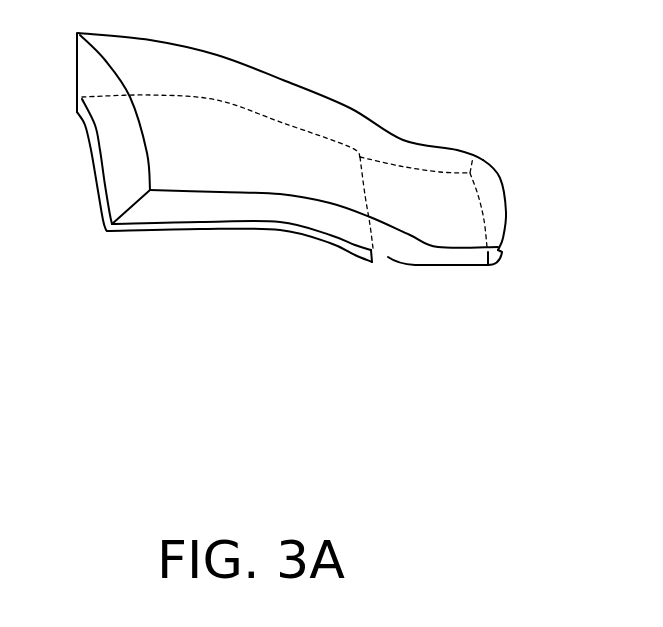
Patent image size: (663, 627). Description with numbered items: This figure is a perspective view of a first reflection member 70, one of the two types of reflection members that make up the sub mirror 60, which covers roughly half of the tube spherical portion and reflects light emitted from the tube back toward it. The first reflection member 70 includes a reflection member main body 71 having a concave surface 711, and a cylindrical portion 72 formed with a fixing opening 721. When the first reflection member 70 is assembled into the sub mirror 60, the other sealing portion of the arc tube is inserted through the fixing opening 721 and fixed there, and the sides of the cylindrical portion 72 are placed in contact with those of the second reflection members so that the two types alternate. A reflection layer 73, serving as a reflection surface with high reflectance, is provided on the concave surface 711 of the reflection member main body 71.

The first reflection member 70 is at (500, 364).
The sub mirror 60 is at (280, 399).
The reflection member main body 71 is at (238, 207).
The concave surface 711 is at (160, 221).
The cylindrical portion 72 is at (398, 215).
The fixing opening 721 is at (455, 267).
The reflection layer 73 is at (103, 198).